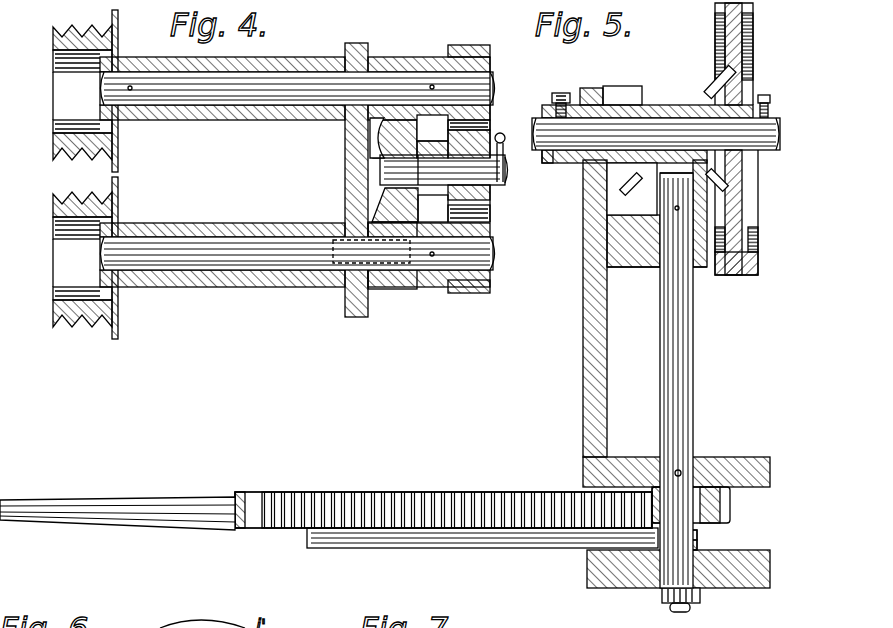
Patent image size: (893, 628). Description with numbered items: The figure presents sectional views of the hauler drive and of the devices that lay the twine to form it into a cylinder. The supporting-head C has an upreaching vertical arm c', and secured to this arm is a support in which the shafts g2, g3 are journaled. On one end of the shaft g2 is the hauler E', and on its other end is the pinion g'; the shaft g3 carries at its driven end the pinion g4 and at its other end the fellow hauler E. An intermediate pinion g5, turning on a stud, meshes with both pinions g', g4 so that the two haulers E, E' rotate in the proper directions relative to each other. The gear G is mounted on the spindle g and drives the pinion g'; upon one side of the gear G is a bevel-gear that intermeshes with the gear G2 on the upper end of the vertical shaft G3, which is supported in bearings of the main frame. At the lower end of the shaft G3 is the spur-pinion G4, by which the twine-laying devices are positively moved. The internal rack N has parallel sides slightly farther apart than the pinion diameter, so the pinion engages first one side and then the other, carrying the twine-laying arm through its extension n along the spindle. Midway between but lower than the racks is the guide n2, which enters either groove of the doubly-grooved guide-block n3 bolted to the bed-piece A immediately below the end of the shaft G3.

In FIG. 4, the hauler E is at (68, 91).
In FIG. 4, the hauler E' is at (68, 258).
In FIG. 4, the vertical arm c' is at (344, 180).
In FIG. 5, the vertical arm c' is at (645, 308).
In FIG. 5, the spindle g is at (656, 143).
In FIG. 4, the pinion g' is at (469, 301).
In FIG. 4, the shaft g2 is at (290, 288).
In FIG. 4, the shaft g3 is at (493, 86).
In FIG. 4, the pinion g4 is at (493, 40).
In FIG. 4, the intermediate pinion g5 is at (490, 207).
In FIG. 5, the gear G is at (750, 262).
In FIG. 5, the gear G2 is at (627, 195).
In FIG. 5, the shaft G3 is at (697, 376).
In FIG. 5, the spur-pinion G4 is at (725, 505).
In FIG. 5, the supporting-head C is at (752, 450).
In FIG. 5, the bed-piece A is at (640, 590).
In FIG. 5, the internal rack N is at (445, 492).
In FIG. 5, the extension n is at (103, 507).
In FIG. 5, the guide n2 is at (473, 538).
In FIG. 5, the doubly-grooved guide-block n3 is at (691, 541).